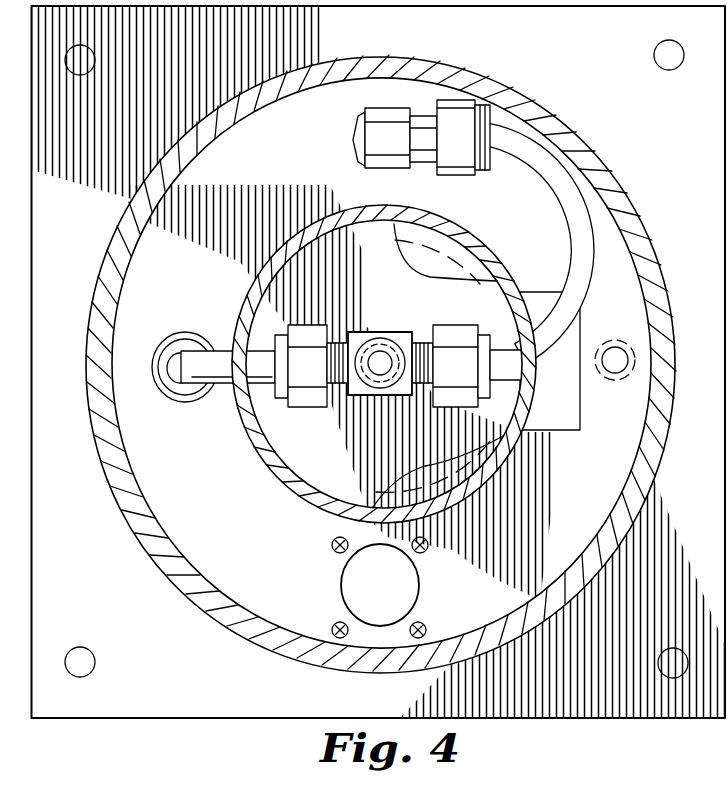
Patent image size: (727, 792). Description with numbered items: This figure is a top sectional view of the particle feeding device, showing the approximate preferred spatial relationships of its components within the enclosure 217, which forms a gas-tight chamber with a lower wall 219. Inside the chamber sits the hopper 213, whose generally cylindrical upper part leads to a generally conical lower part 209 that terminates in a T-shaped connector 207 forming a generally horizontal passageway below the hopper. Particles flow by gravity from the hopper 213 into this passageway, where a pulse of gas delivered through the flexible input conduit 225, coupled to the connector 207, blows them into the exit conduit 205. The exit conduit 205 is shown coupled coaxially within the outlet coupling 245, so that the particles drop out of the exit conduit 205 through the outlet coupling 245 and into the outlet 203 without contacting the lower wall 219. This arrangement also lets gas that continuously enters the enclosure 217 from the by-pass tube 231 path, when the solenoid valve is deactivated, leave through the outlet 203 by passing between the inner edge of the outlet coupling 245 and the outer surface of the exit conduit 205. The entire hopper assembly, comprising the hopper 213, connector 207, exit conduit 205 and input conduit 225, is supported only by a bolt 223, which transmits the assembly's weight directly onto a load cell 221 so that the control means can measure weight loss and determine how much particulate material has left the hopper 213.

The outlet 203 is at (167, 389).
The exit conduit 205 is at (212, 349).
The connector 207 is at (362, 110).
The lower part 209 is at (392, 244).
The hopper 213 is at (261, 458).
The enclosure 217 is at (224, 598).
The lower wall 219 is at (578, 61).
The load cell 221 is at (327, 477).
The bolt 223 is at (384, 338).
The flexible input conduit 225 is at (554, 192).
The by-pass tube 231 is at (615, 374).
The outlet coupling 245 is at (162, 336).